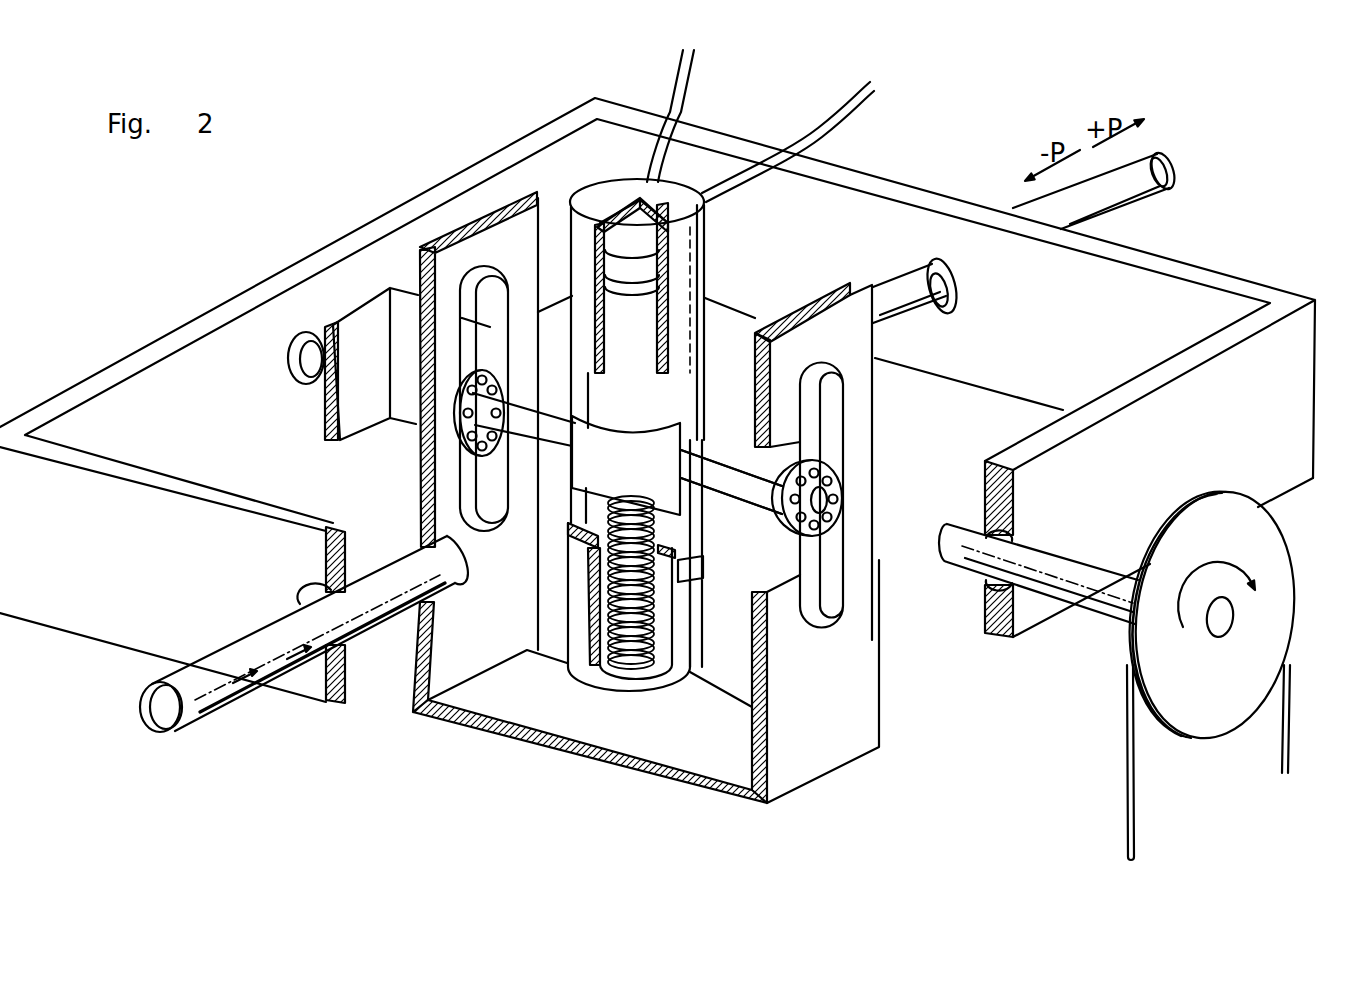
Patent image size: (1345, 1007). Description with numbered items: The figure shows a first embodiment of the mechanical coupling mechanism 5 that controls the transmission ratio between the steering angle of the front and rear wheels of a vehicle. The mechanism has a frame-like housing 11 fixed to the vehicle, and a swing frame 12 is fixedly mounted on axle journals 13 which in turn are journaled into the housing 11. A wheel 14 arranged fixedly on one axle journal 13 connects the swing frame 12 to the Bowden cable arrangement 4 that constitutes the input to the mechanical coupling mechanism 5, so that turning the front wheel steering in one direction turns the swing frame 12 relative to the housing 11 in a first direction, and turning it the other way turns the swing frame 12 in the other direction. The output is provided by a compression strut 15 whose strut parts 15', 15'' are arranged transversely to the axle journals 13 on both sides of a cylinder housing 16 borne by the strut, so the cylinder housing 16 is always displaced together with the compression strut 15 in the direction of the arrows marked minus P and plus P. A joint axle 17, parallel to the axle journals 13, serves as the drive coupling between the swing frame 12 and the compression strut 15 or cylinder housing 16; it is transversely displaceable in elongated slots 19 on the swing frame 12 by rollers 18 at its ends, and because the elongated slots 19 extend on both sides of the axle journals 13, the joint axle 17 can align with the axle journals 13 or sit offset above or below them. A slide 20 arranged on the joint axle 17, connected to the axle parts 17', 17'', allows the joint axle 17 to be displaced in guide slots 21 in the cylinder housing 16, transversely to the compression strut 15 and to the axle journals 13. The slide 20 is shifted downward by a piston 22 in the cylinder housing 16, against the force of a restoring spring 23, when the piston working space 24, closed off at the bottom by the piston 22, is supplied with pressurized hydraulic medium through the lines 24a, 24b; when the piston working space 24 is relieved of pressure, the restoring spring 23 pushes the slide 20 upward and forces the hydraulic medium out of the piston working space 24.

The Bowden cable arrangement 4 is at (1125, 826).
The mechanical coupling mechanism 5 is at (414, 185).
The frame-like housing 11 is at (128, 363).
The swing frame 12 is at (830, 750).
The axle journals 13 is at (303, 343).
The wheel 14 is at (1274, 560).
The compression strut 15 is at (250, 634).
The strut part 15' is at (322, 670).
The strut part 15'' is at (1120, 189).
The cylinder housing 16 is at (682, 193).
The joint axle 17 is at (731, 420).
The axle part 17' is at (731, 508).
The axle part 17'' is at (524, 456).
The rollers 18 is at (462, 445).
The elongated slots 19 is at (465, 500).
The slide 20 is at (587, 427).
The guide slots 21 is at (694, 560).
The piston 22 is at (648, 270).
The restoring spring 23 is at (618, 647).
The piston working space 24 is at (607, 222).
The line 24a is at (686, 74).
The line 24b is at (838, 96).